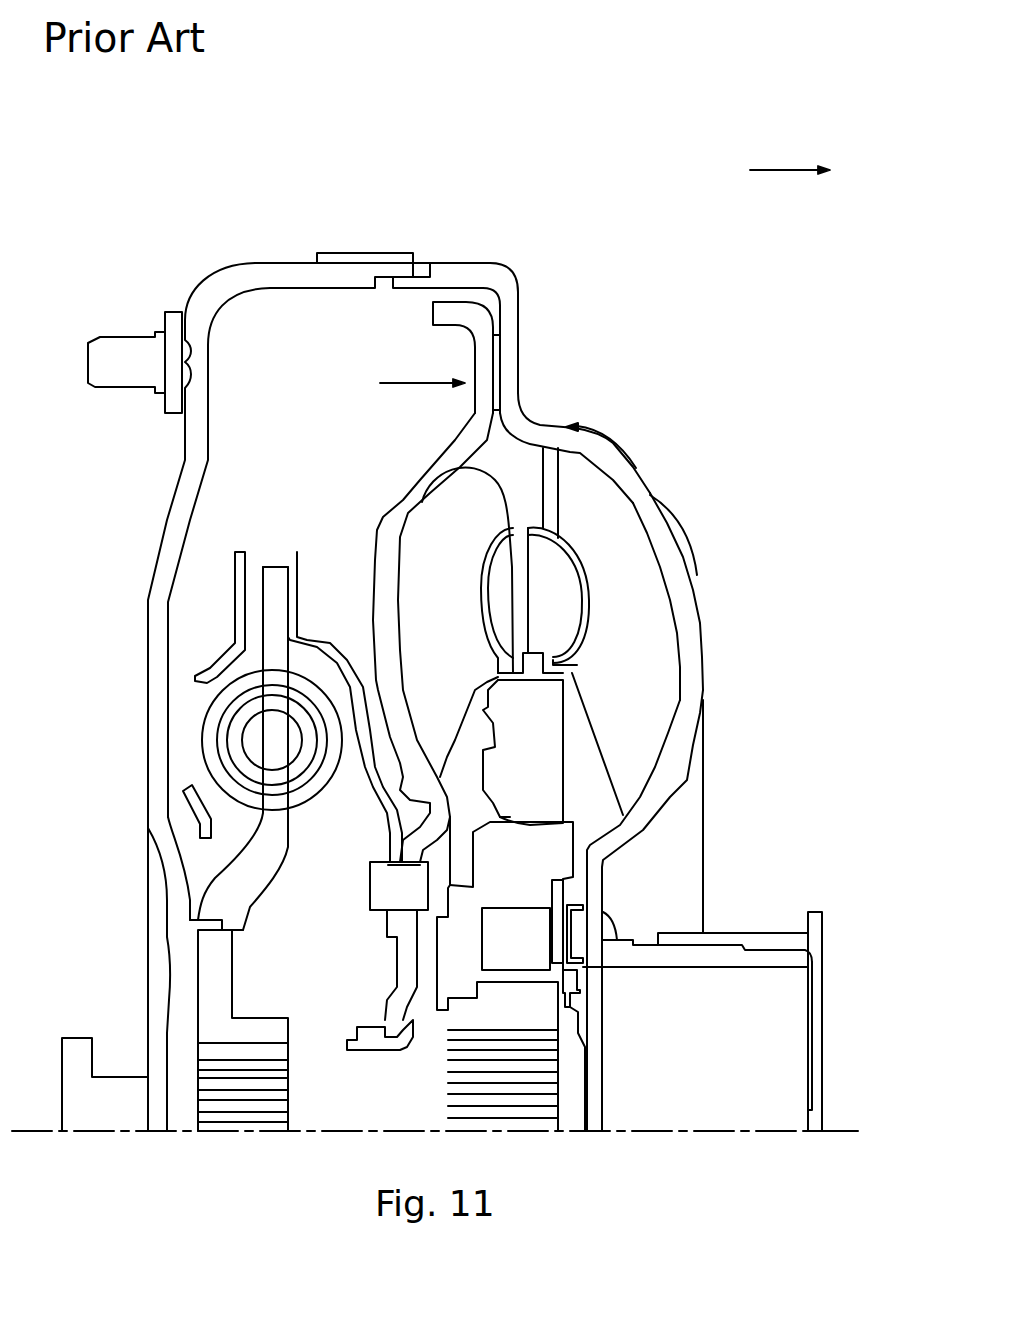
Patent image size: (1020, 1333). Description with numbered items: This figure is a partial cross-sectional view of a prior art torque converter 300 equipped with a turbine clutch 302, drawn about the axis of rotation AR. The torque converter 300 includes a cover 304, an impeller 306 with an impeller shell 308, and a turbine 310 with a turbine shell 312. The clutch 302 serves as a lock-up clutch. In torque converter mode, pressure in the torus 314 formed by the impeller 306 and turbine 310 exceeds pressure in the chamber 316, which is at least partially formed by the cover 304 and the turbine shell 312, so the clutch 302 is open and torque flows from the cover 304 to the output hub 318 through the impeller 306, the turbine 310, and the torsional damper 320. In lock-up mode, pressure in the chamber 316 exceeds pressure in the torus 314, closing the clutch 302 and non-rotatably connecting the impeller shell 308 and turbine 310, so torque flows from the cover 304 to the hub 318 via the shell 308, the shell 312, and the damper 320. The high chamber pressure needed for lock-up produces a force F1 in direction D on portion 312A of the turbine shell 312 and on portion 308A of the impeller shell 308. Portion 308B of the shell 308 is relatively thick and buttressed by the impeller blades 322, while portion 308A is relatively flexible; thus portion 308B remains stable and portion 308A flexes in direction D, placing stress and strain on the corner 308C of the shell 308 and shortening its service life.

The torque converter 300 is at (613, 255).
The turbine clutch 302 is at (522, 250).
The cover 304 is at (225, 278).
The impeller 306 is at (662, 461).
The impeller shell 308 is at (712, 644).
The portion of impeller shell 308A is at (514, 351).
The portion of impeller shell 308B is at (648, 513).
The corner of impeller shell 308C is at (518, 435).
The turbine 310 is at (368, 521).
The turbine shell 312 is at (387, 580).
The portion of turbine shell 312A is at (478, 347).
The torus 314 is at (552, 602).
The chamber 316 is at (297, 373).
The output hub 318 is at (277, 603).
The torsional damper 320 is at (180, 722).
The blades 322 is at (632, 713).
The force F1 is at (380, 383).
The direction D is at (778, 170).
The axis of rotation AR is at (31, 1132).